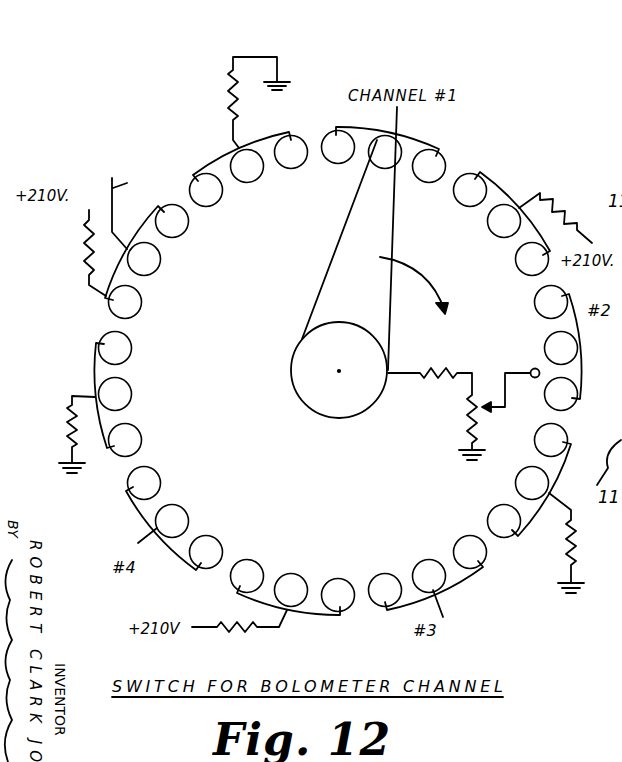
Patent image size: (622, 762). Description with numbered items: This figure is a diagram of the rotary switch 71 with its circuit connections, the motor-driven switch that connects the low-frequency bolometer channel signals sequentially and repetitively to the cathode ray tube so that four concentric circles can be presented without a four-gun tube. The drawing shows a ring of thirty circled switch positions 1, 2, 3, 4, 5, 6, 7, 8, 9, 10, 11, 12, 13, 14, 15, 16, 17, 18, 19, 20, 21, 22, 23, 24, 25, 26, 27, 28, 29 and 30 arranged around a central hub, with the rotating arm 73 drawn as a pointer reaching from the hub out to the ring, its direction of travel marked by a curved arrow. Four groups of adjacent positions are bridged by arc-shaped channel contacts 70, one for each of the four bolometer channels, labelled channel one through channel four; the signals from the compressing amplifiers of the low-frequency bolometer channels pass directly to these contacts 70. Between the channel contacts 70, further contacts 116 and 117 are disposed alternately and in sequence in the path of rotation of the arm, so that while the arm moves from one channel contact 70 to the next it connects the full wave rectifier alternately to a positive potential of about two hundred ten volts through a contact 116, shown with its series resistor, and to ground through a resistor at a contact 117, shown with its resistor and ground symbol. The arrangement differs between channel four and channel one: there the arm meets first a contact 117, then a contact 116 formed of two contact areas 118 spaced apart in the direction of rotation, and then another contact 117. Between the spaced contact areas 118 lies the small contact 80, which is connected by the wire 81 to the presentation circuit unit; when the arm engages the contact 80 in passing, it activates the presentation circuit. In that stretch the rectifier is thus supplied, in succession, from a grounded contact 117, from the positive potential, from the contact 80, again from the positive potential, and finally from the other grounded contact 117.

The channel contacts 70 is at (400, 113).
The rotary switch 71 is at (240, 438).
The wiper arm 73 is at (347, 257).
The small contact 80 is at (160, 259).
The wire 81 is at (131, 213).
The contact 116 is at (508, 187).
The grounded contact 117 is at (543, 537).
The contact areas 118 is at (188, 220).
The switch contact 1 is at (338, 147).
The bolometer cells 2 is at (385, 152).
The switch contact 3 is at (429, 166).
The switch contact 4 is at (470, 190).
The switch contact 5 is at (504, 221).
The switch contact 6 is at (532, 259).
The switch contact 7 is at (551, 302).
The switch contact 8 is at (561, 348).
The switch contact 9 is at (561, 394).
The switch contact 10 is at (551, 440).
The switch contact 11 is at (532, 483).
The switch contact 12 is at (504, 521).
The switch contact 13 is at (470, 552).
The switch contact 14 is at (429, 576).
The switch contact 15 is at (385, 590).
The switch contact 16 is at (338, 595).
The switch contact 17 is at (291, 590).
The switch contact 18 is at (247, 576).
The switch contact 19 is at (206, 552).
The switch contact 20 is at (172, 521).
The switch contact 21 is at (144, 483).
The switch contact 22 is at (125, 440).
The switch contact 23 is at (115, 394).
The switch contact 24 is at (115, 348).
The switch contact 25 is at (125, 302).
The switch contact 26 is at (144, 259).
The switch contact 27 is at (172, 221).
The switch contact 28 is at (206, 190).
The switch contact 29 is at (247, 166).
The switch contact 30 is at (291, 152).